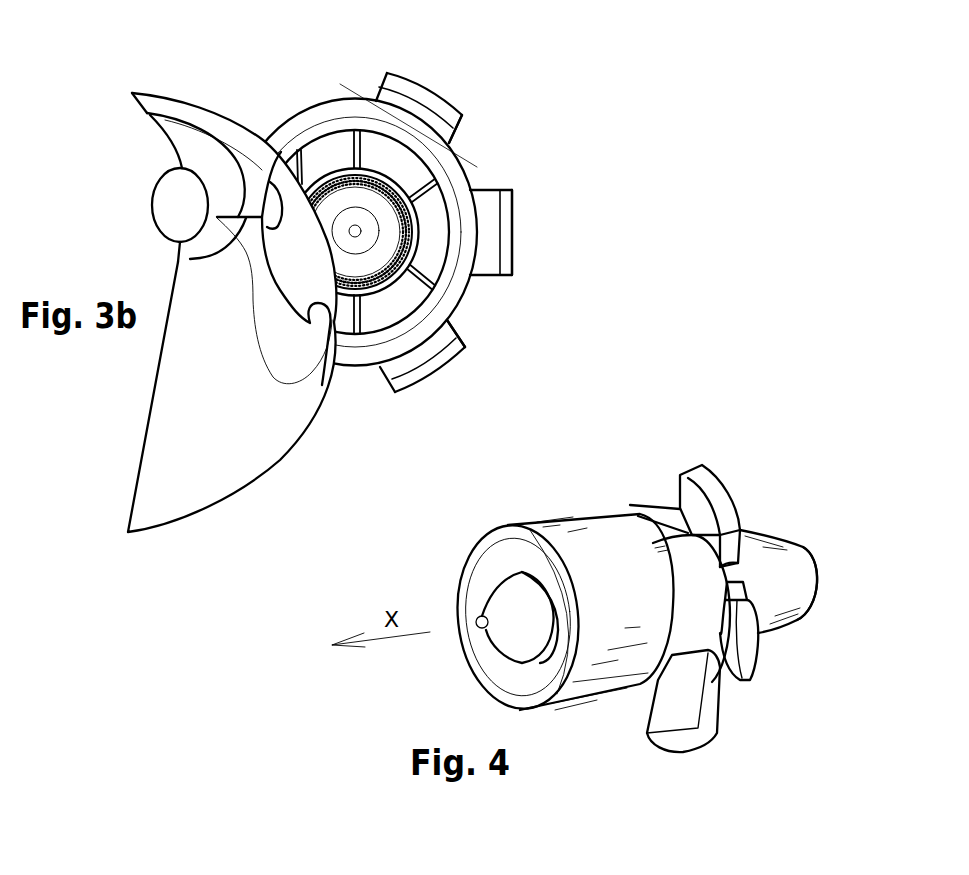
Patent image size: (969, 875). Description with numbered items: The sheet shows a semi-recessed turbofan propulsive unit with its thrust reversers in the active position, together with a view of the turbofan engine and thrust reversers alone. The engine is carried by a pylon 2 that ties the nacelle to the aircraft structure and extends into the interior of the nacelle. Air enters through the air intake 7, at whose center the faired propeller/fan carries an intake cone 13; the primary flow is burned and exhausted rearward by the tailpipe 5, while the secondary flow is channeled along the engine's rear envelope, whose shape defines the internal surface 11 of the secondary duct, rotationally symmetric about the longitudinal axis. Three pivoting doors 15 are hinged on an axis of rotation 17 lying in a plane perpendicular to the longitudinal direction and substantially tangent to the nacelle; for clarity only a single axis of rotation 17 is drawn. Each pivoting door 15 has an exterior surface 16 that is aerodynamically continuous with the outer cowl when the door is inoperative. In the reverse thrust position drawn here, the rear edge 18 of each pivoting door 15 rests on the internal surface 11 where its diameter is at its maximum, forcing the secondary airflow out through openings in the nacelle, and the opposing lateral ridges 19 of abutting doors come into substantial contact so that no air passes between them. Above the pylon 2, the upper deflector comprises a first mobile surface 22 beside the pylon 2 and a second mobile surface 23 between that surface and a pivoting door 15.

In FIG. 3B, the pylon 2 is at (180, 260).
In FIG. 4, the tailpipe 5 is at (807, 548).
In FIG. 4, the air intake 7 is at (601, 594).
In FIG. 4, the internal surface of the secondary duct 11 is at (762, 535).
In FIG. 4, the intake cone 13 is at (506, 629).
In FIG. 3B, the pivoting door 15 is at (430, 67).
In FIG. 4, the pivoting door 15 is at (734, 467).
In FIG. 3B, the exterior surface 16 is at (451, 98).
In FIG. 3B, the axis of rotation 17 is at (347, 85).
In FIG. 3B, the rear edge 18 is at (387, 178).
In FIG. 3B, the lateral ridge 19 is at (442, 210).
In FIG. 3B, the first mobile surface 22 is at (297, 157).
In FIG. 4, the first mobile surface 22 is at (647, 523).
In FIG. 3B, the second mobile surface 23 is at (328, 154).
In FIG. 4, the second mobile surface 23 is at (667, 512).